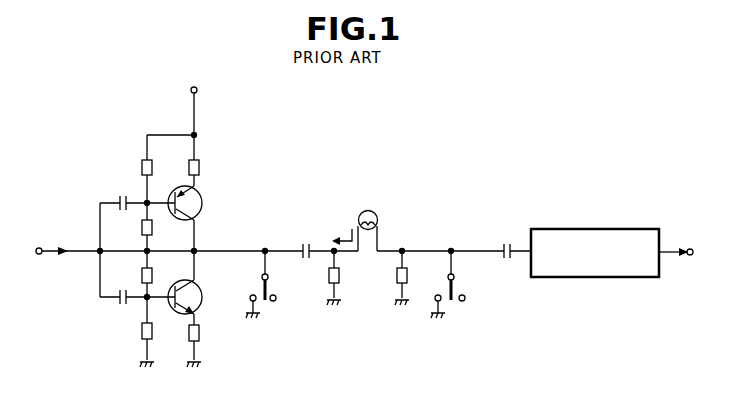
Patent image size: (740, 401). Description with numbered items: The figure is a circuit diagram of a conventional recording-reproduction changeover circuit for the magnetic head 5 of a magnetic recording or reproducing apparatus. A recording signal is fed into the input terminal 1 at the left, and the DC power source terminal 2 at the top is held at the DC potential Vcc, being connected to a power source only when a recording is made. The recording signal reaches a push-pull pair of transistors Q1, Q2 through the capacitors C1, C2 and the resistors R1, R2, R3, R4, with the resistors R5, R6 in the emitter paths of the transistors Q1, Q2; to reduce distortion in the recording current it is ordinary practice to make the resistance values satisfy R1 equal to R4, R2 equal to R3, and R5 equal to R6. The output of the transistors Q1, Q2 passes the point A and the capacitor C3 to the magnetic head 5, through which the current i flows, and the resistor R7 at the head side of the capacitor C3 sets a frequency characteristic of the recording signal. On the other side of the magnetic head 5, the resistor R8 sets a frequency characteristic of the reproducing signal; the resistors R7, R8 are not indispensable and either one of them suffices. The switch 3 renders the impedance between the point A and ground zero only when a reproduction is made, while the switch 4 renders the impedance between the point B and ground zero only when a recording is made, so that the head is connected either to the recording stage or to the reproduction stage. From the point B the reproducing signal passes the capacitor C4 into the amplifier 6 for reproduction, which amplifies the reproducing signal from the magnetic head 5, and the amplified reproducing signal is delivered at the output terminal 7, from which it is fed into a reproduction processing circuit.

The input terminal 1 is at (38, 248).
The DC power source terminal 2 is at (191, 87).
The switch 3 is at (262, 284).
The switch 4 is at (461, 291).
The magnetic head 5 is at (365, 210).
The amplifier for reproduction 6 is at (588, 229).
The output terminal 7 is at (690, 248).
The resistor R1 is at (141, 165).
The resistor R2 is at (141, 228).
The resistor R3 is at (141, 272).
The resistor R4 is at (141, 332).
The resistor R5 is at (200, 166).
The resistor R6 is at (200, 333).
The resistor R7 is at (328, 276).
The resistor R8 is at (396, 276).
The capacitor C1 is at (119, 198).
The capacitor C2 is at (120, 304).
The capacitor C3 is at (305, 243).
The capacitor C4 is at (506, 243).
The transistor Q1 is at (202, 200).
The transistor Q2 is at (202, 294).
The point A is at (243, 247).
The point B is at (447, 247).
The current i is at (342, 231).